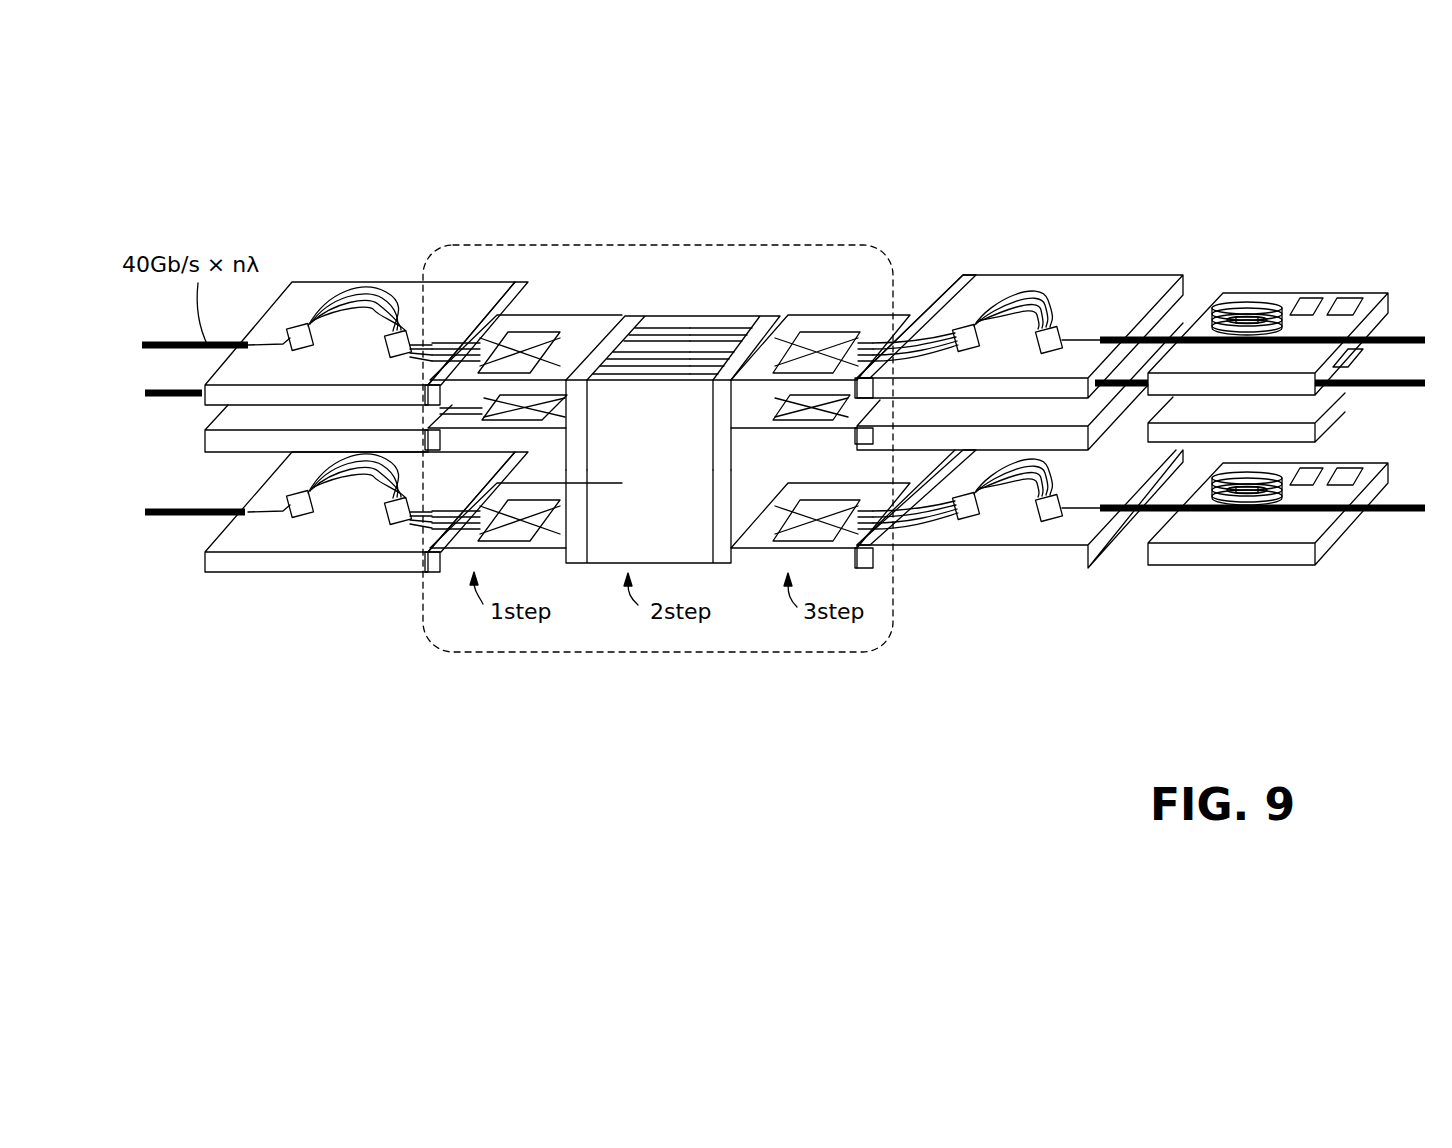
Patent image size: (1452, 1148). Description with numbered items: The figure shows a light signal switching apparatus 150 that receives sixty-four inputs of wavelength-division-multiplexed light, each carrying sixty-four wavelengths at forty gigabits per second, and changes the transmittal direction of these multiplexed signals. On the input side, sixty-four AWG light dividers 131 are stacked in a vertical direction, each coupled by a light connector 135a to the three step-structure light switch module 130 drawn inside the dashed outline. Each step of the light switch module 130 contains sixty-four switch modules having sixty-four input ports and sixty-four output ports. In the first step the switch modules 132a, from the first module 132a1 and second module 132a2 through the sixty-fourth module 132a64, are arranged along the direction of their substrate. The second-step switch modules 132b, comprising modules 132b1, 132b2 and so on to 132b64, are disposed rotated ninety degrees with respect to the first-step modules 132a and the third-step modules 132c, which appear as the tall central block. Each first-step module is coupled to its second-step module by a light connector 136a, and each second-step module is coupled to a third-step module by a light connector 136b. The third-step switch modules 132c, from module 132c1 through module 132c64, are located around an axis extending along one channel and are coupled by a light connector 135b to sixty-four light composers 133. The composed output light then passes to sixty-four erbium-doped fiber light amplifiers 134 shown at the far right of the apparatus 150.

The three step-structure light switch module 130 is at (726, 652).
The AWG light divider 131 is at (365, 282).
The light switch module of the first step 132a is at (559, 454).
The first light switch module of the first step 132a1 is at (527, 315).
The second light switch module of the first step 132a2 is at (548, 445).
The sixty-fourth light switch module of the first step 132a64 is at (557, 565).
The light switch module of the second step 132b is at (685, 452).
The first light switch module of the second step 132b1 is at (660, 322).
The second light switch module of the second step 132b2 is at (753, 445).
The sixty-fourth light switch module of the second step 132b64 is at (607, 565).
The light switch module of the third step 132c is at (878, 439).
The first light switch module of the third step 132c1 is at (825, 315).
The sixty-fourth light switch module of the third step 132c64 is at (845, 565).
The light composer 133 is at (1090, 275).
The light amplifier (EDFA) 134 is at (1297, 293).
The light connector 135a is at (433, 572).
The light connector 135b is at (918, 318).
The light connector 136a is at (633, 322).
The light connector 136b is at (775, 318).
The light signal switching apparatus 150 is at (833, 765).